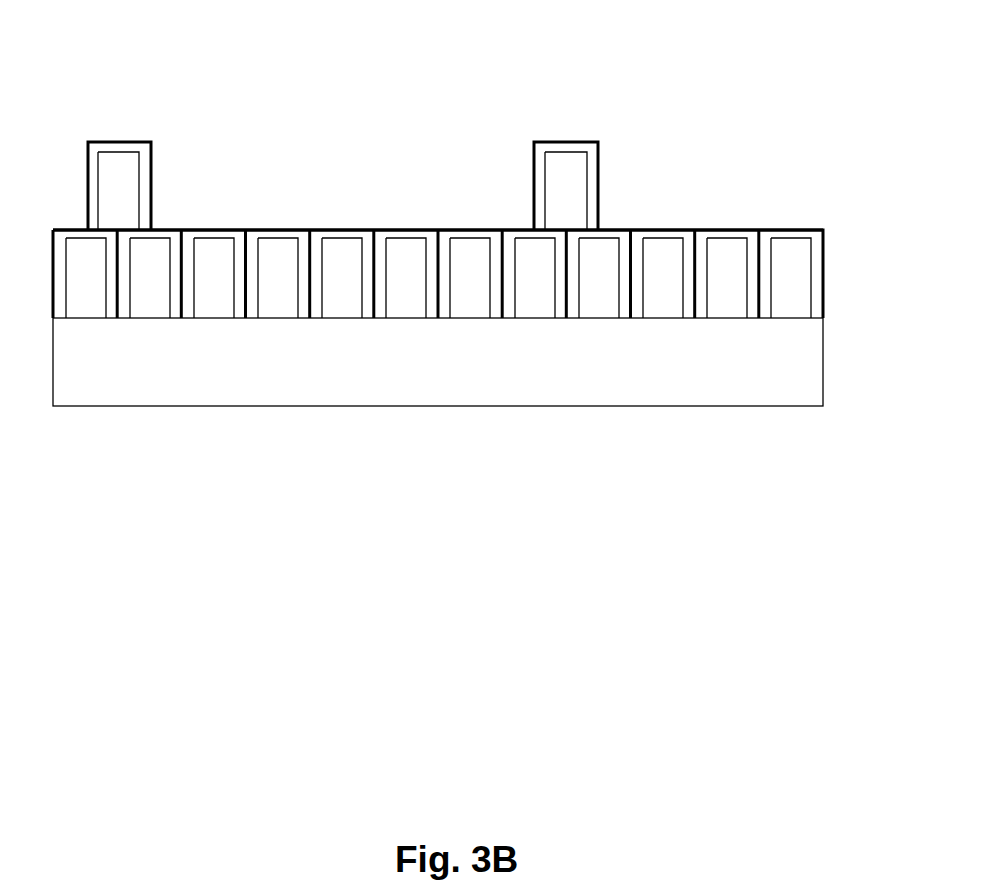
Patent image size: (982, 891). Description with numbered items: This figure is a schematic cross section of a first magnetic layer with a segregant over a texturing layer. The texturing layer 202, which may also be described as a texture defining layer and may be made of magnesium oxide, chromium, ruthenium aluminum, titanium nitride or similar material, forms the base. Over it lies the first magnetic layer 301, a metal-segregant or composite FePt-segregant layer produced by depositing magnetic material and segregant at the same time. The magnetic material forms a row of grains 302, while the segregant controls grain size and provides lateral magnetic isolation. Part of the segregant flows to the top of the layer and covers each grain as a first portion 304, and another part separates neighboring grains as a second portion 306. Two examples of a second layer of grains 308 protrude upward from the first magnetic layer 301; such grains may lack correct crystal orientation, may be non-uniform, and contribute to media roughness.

The texturing layer 202 is at (748, 375).
The first magnetic layer 301 is at (833, 272).
The grains 302 is at (275, 264).
The first portion 304 is at (466, 228).
The second portion 306 is at (433, 262).
The second layer of grains 308 is at (129, 135).